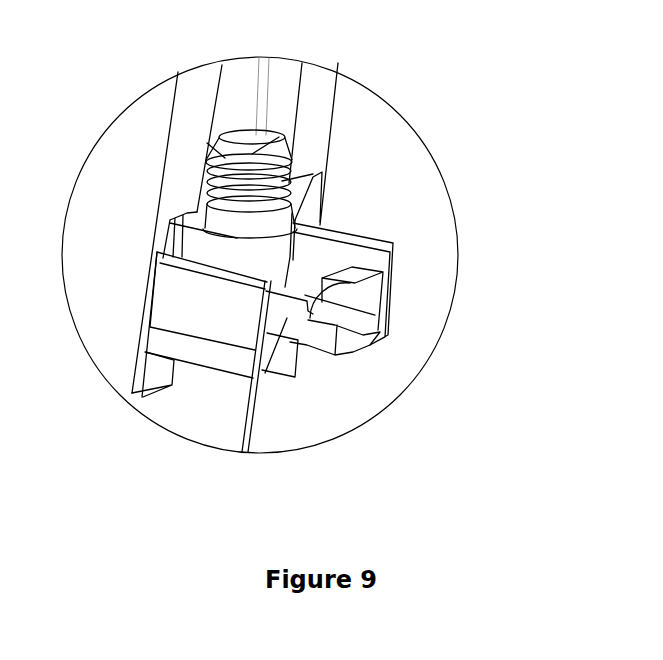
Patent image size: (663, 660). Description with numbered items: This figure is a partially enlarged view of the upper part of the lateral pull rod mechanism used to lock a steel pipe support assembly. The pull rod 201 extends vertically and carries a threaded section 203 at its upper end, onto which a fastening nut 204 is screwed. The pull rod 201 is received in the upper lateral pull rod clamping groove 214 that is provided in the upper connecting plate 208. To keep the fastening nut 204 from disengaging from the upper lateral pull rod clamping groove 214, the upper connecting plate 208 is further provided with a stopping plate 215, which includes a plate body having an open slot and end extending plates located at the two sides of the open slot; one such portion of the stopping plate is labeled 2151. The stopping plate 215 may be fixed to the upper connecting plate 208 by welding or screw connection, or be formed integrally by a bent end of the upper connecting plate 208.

The pull rod 201 is at (222, 405).
The threaded section 203 is at (280, 137).
The fastening nut 204 is at (237, 257).
The upper connecting plate 208 is at (365, 338).
The latch 2151 is at (310, 317).
The upper lateral pull rod clamping groove 214 is at (310, 360).
The stopping plate 215 is at (255, 355).